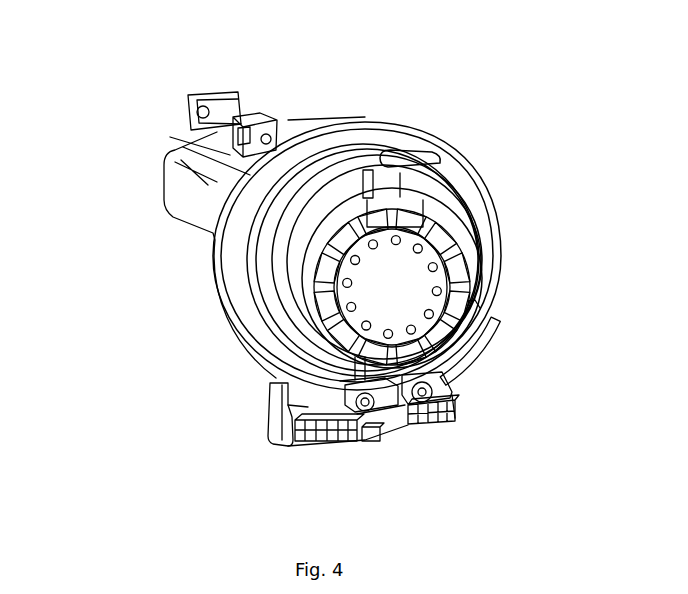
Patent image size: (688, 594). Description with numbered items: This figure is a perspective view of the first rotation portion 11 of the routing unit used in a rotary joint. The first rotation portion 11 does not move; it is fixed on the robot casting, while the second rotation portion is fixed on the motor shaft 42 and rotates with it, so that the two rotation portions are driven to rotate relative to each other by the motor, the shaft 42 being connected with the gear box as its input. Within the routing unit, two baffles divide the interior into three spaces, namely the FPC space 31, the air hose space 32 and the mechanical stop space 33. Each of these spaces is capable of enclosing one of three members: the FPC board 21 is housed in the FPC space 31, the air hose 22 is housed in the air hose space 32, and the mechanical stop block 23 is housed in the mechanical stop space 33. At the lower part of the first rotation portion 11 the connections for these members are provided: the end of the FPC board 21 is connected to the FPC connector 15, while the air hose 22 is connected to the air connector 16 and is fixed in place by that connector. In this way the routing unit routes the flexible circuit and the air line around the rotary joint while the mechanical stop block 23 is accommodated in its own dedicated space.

The first rotation portion 11 is at (428, 130).
The FPC connector 15 is at (456, 408).
The air connector 16 is at (285, 402).
The FPC board 21 is at (460, 237).
The air hose 22 is at (470, 186).
The mechanical stop block 23 is at (487, 332).
The FPC space 31 is at (236, 112).
The air hose space 32 is at (277, 240).
The mechanical stop space 33 is at (300, 198).
The shaft 42 is at (378, 299).